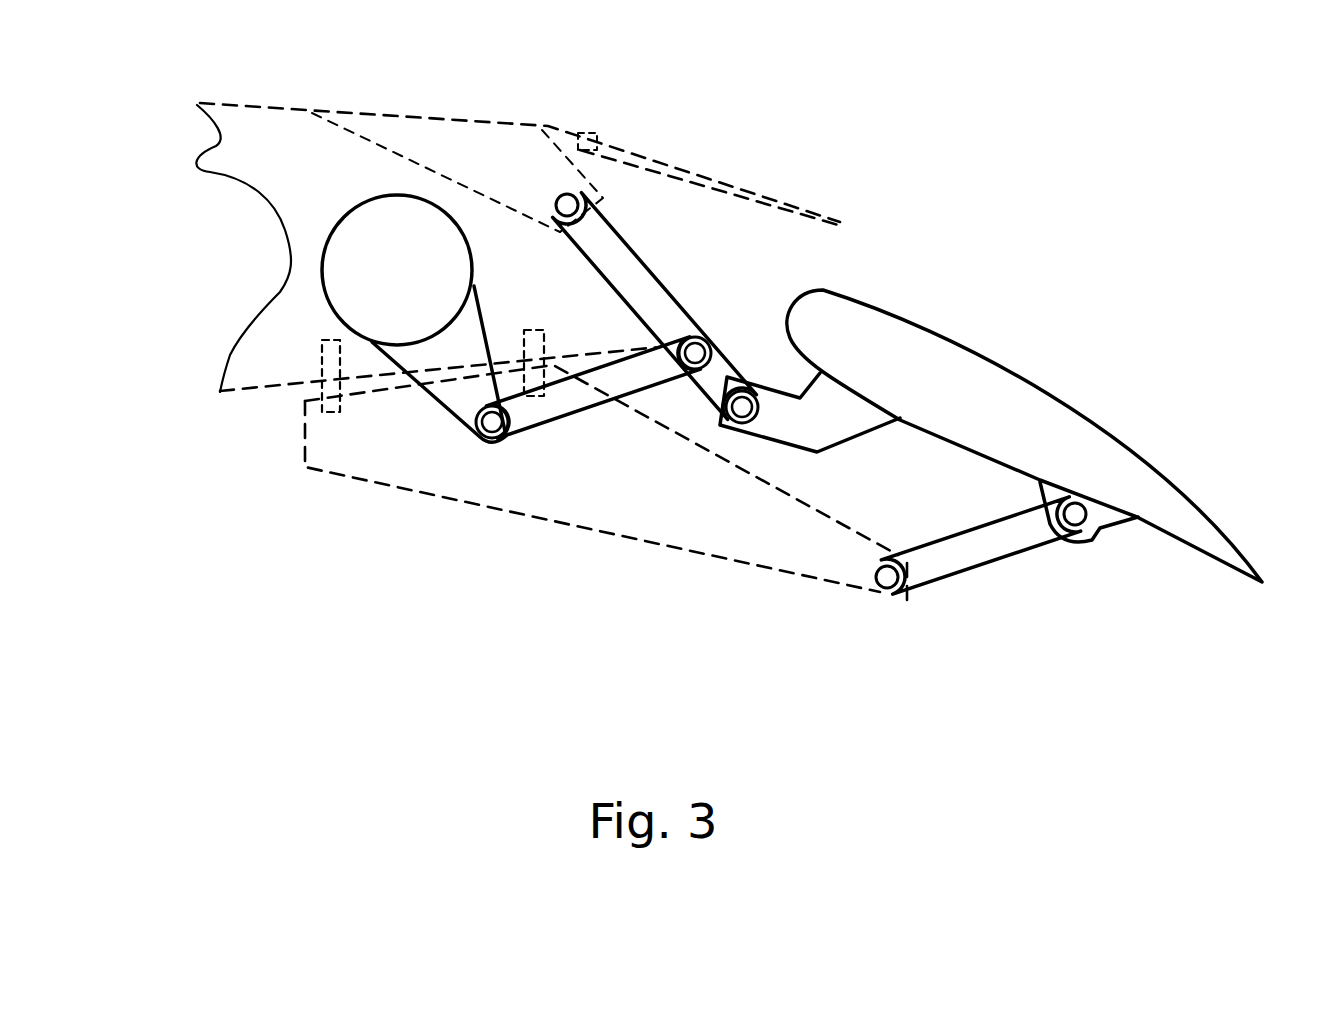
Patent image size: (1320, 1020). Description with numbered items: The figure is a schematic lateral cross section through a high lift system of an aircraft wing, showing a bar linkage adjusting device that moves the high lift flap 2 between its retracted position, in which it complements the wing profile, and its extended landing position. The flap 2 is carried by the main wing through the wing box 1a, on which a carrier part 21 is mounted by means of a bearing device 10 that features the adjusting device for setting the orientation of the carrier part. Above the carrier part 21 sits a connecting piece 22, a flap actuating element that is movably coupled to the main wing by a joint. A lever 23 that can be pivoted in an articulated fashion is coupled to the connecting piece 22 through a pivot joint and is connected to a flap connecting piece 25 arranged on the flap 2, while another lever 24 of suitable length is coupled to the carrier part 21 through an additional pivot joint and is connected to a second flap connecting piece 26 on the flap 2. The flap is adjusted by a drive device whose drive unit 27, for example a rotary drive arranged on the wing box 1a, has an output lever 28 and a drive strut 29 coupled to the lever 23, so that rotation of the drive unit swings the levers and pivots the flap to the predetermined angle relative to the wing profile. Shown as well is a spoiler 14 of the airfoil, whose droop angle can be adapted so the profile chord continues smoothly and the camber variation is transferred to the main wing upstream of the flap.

The wing box 1a is at (308, 185).
The high lift flap 2 is at (933, 378).
The bearing device 10 is at (325, 352).
The spoiler 14 is at (663, 160).
The carrier part 21 is at (765, 523).
The connecting piece 22 is at (508, 165).
The lever 23 is at (653, 303).
The lever 24 is at (983, 547).
The flap connecting piece 25 is at (1110, 518).
The flap connecting piece 26 is at (817, 412).
The drive unit 27 is at (413, 300).
The output lever 28 is at (455, 350).
The drive strut 29 is at (643, 373).